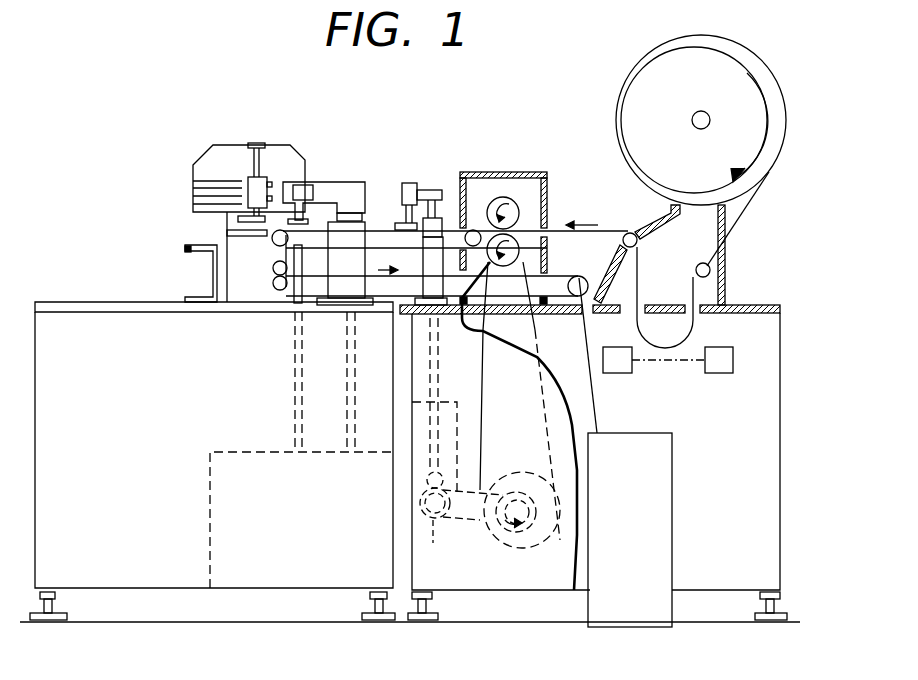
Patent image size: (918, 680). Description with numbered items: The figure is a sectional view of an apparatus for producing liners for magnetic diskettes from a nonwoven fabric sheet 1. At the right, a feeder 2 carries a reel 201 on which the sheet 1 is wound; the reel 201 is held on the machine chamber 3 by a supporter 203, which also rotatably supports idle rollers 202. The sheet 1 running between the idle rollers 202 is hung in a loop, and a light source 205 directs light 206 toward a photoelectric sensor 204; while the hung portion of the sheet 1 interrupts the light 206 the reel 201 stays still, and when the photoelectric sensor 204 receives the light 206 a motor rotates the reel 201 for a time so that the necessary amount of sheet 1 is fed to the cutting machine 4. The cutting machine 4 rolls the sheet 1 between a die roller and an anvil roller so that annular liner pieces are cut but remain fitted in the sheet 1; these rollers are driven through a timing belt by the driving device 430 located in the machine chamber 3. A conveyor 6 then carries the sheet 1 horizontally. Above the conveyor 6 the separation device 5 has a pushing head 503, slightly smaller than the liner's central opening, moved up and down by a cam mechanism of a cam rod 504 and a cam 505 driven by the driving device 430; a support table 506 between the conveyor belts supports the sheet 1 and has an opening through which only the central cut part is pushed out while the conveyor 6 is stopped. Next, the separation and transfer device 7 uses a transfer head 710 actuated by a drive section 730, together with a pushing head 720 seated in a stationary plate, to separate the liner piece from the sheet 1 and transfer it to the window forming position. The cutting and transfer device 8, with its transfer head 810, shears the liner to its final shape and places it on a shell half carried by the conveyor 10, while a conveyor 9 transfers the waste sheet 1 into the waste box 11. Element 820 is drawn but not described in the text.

The nonwoven fabric sheet 1 is at (755, 200).
The feeder 2 is at (776, 60).
The reel 201 is at (782, 96).
The idle rollers 202 is at (638, 243).
The supporter 203 is at (727, 266).
The photoelectric sensor 204 is at (723, 374).
The light source 205 is at (618, 374).
The light 206 is at (680, 362).
The machine chamber 3 is at (783, 487).
The cutting machine 4 is at (488, 166).
The separation device 5 is at (433, 172).
The conveyor 6 is at (462, 222).
The separation and transfer device 7 is at (339, 170).
The cutting and transfer device 8 is at (239, 162).
The conveyor 9 is at (305, 312).
The conveyor 10 is at (195, 250).
The waste box 11 is at (668, 521).
The driving device 430 is at (533, 548).
The pushing head 503 is at (406, 182).
The cam rod 504 is at (437, 385).
The cam 505 is at (459, 530).
The support table 506 is at (392, 228).
The transfer head 710 is at (279, 230).
The pushing head 720 is at (305, 232).
The drive section 730 is at (233, 450).
The transfer head 810 is at (238, 219).
The lower plate 820 is at (228, 233).